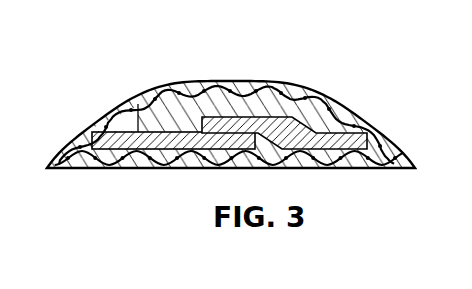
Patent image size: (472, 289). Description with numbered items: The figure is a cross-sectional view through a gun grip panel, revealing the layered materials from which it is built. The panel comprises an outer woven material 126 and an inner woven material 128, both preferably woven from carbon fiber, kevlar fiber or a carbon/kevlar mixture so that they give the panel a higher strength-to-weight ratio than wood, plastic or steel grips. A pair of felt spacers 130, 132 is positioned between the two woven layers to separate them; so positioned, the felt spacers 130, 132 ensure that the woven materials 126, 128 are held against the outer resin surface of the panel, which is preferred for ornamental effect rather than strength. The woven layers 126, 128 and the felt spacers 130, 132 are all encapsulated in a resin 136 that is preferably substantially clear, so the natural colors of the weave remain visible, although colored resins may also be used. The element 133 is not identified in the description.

The upper conductive contact layer 126 is at (80, 142).
The lower conductive contact layer 128 is at (120, 167).
The stepped contact plate 130 is at (322, 132).
The spacer 132 is at (138, 125).
The lower contact plate 133 is at (223, 133).
The dome shell 136 is at (166, 88).